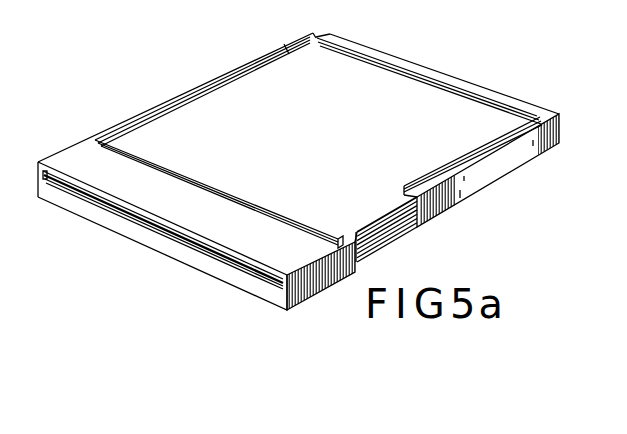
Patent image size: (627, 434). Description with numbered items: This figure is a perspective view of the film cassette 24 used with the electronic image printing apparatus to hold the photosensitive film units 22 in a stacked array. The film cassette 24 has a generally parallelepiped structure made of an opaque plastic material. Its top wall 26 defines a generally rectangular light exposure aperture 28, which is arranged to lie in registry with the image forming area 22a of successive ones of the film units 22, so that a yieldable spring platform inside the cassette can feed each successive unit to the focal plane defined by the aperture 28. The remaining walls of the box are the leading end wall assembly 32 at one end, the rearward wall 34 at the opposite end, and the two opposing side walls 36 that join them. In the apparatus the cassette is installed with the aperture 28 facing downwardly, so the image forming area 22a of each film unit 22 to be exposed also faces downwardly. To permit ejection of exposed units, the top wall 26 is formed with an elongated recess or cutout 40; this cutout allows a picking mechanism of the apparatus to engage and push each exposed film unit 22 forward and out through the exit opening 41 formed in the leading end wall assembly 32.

The photosensitive film units 22 is at (222, 112).
The image forming area 22a is at (346, 117).
The film cassette 24 is at (311, 315).
The top wall 26 is at (72, 157).
The light exposure aperture 28 is at (158, 160).
The leading end wall assembly 32 is at (155, 238).
The rearward wall 34 is at (557, 114).
The side walls 36 is at (251, 58).
The elongated recess or cutout 40 is at (309, 31).
The exit opening 41 is at (200, 247).